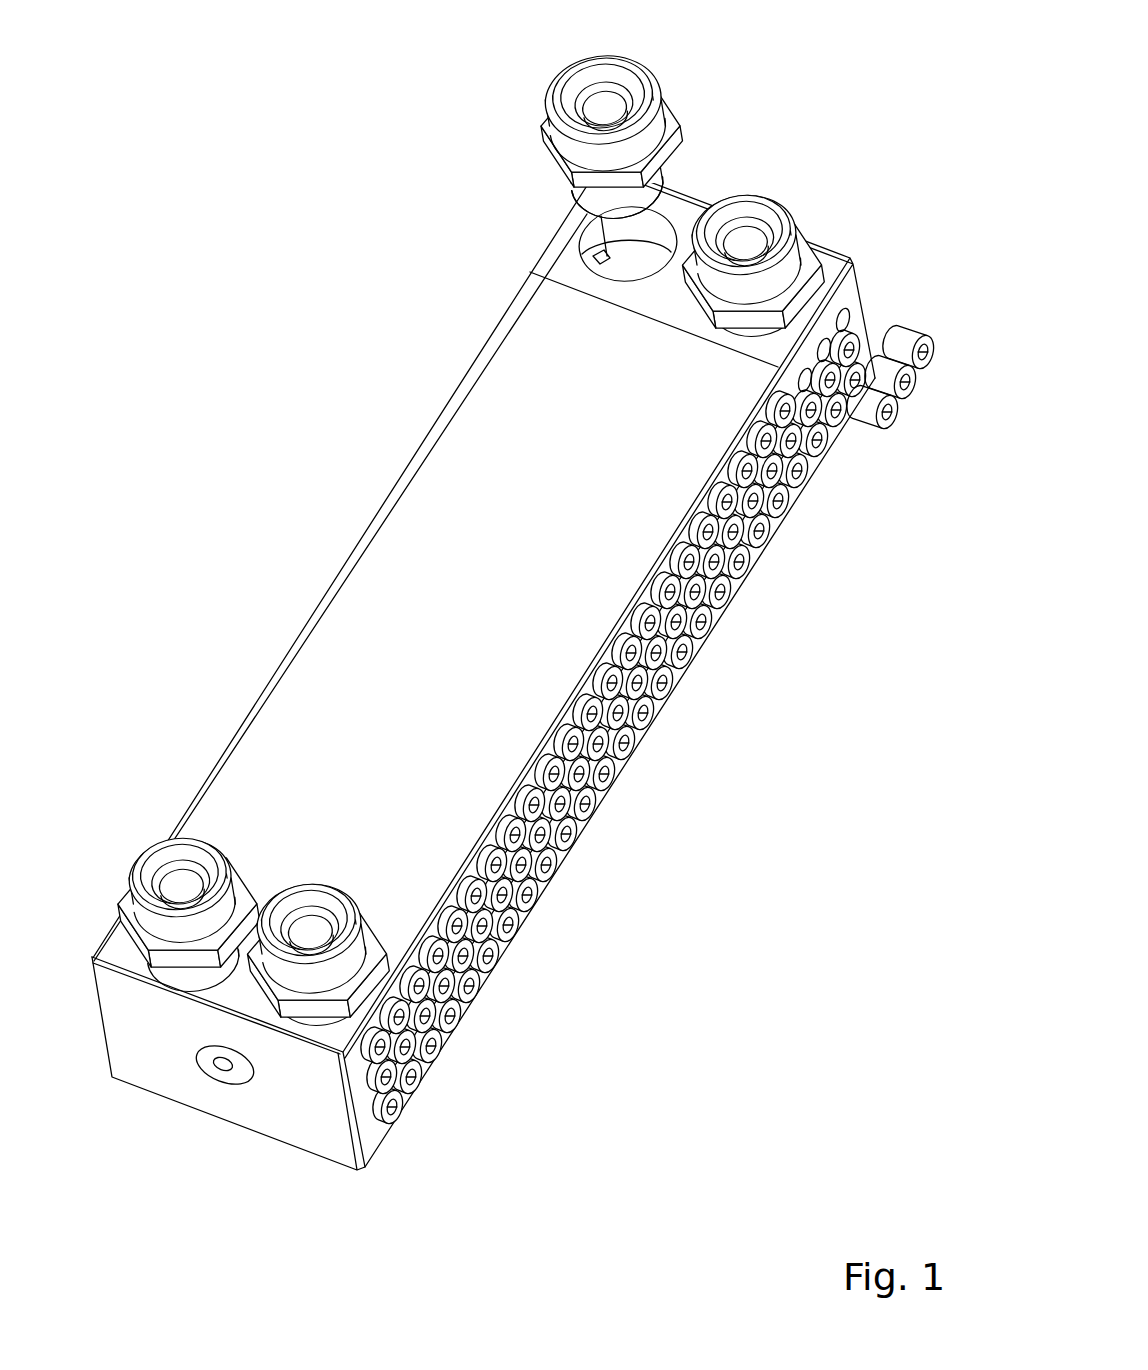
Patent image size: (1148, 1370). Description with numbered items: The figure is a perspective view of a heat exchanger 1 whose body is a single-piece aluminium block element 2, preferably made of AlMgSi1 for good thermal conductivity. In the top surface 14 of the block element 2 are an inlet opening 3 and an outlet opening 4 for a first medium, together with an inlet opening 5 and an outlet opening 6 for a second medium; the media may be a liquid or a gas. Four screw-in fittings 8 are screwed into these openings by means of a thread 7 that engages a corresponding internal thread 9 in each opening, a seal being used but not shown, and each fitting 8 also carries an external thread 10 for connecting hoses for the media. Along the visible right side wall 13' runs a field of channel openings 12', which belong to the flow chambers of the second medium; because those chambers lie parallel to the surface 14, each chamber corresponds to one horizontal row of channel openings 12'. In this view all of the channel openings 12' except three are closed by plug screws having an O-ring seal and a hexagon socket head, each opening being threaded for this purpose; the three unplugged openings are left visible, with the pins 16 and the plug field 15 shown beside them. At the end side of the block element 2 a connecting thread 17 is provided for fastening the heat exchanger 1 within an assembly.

The heat exchanger 1 is at (327, 495).
The block element 2 is at (272, 674).
The inlet opening 3 is at (663, 222).
The outlet opening 4 is at (182, 977).
The inlet opening 5 is at (318, 1024).
The outlet opening 6 is at (832, 292).
The thread 7 is at (588, 202).
The screw-in fittings 8 is at (677, 110).
The internal thread 9 is at (590, 243).
The external thread 10 is at (572, 140).
The channel openings 12' is at (869, 305).
The side wall 13' is at (620, 787).
The surface 14 is at (497, 605).
The pin field 15 is at (780, 515).
The pins 16 is at (886, 416).
The connecting thread 17 is at (223, 1068).